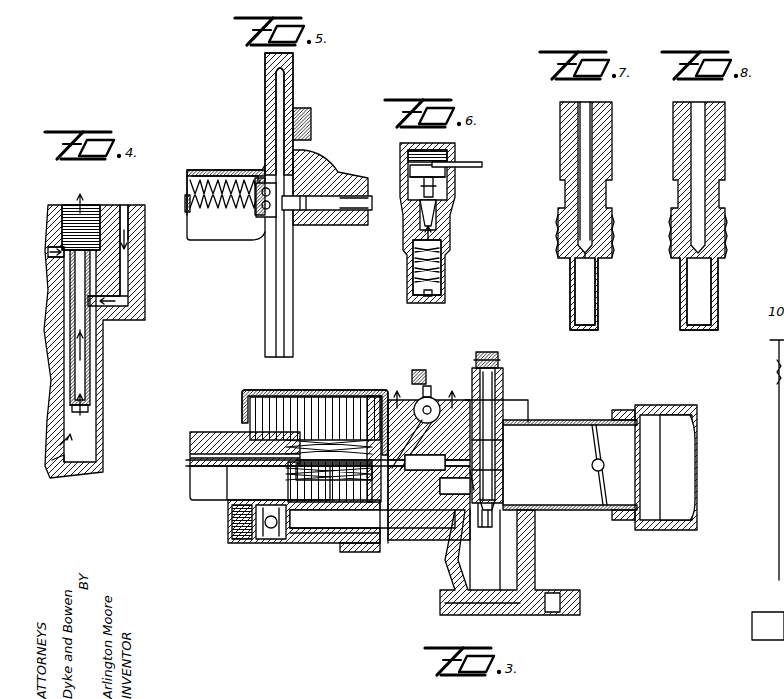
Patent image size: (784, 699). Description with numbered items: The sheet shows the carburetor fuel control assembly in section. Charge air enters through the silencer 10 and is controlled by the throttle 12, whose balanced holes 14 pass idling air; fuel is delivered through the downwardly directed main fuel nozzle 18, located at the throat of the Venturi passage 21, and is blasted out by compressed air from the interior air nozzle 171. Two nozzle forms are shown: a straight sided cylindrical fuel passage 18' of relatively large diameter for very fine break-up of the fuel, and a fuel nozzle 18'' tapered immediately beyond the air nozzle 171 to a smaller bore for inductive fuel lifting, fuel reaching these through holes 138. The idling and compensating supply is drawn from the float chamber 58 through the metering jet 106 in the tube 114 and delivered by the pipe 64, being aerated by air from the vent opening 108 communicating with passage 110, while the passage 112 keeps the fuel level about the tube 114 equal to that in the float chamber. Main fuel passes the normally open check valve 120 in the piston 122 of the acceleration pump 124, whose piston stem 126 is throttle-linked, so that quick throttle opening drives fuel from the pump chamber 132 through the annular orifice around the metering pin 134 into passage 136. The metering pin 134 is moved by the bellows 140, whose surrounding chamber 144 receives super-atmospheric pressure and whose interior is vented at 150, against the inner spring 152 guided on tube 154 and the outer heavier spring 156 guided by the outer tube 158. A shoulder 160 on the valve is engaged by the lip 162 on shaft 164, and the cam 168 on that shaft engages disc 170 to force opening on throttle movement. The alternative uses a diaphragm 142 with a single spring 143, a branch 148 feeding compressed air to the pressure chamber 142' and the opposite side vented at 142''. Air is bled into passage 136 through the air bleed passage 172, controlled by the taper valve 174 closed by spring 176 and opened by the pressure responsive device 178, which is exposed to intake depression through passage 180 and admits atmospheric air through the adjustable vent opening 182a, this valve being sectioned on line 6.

In FIG. 3, the silencer 10 is at (690, 479).
In FIG. 3, the throttle 12 is at (604, 468).
In FIG. 3, the balanced holes 14 is at (598, 440).
In FIG. 3, the main fuel nozzle 18 is at (490, 527).
In FIG. 8, the straight sided cylindrical fuel passage 18' is at (716, 294).
In FIG. 7, the fuel nozzle 18'' is at (600, 294).
In FIG. 3, the Venturi passage 21 is at (538, 530).
In FIG. 4, the float chamber 58 is at (56, 478).
In FIG. 4, the pipe 64 is at (92, 210).
In FIG. 4, the metering jet 106 is at (92, 407).
In FIG. 4, the air vent opening 108 is at (128, 210).
In FIG. 4, the passage 110 is at (128, 277).
In FIG. 4, the passage 112 is at (52, 252).
In FIG. 4, the tube 114 is at (90, 345).
In FIG. 3, the check valve 120 is at (276, 540).
In FIG. 3, the piston 122 is at (242, 540).
In FIG. 3, the acceleration pump 124 is at (320, 540).
In FIG. 3, the piston stem 126 is at (372, 552).
In FIG. 3, the pump chamber 132 is at (345, 528).
In FIG. 3, the metering pin 134 is at (456, 487).
In FIG. 3, the passage 136 is at (502, 470).
In FIG. 7, the holes 138 is at (610, 196).
In FIG. 8, the holes 138 is at (723, 196).
In FIG. 3, the bellows 140 is at (372, 395).
In FIG. 5, the diaphragm 142 is at (296, 205).
In FIG. 5, the pressure chamber 142' is at (305, 205).
In FIG. 5, the atmospheric vent 142'' is at (184, 176).
In FIG. 5, the spring 143 is at (230, 172).
In FIG. 3, the chamber 144 is at (278, 392).
In FIG. 5, the branch 148 is at (312, 124).
In FIG. 3, the atmospheric vent 150 is at (188, 462).
In FIG. 3, the inner spring 152 is at (296, 470).
In FIG. 3, the tube 154 is at (296, 462).
In FIG. 3, the outer spring 156 is at (310, 438).
In FIG. 3, the outer tube 158 is at (305, 486).
In FIG. 3, the shoulder 160 is at (425, 462).
In FIG. 3, the lip 162 is at (390, 400).
In FIG. 3, the shaft 164 is at (427, 390).
In FIG. 5, the cam 168 is at (302, 172).
In FIG. 3, the cam 168 is at (398, 528).
In FIG. 5, the disc 170 is at (300, 222).
In FIG. 3, the disc 170 is at (385, 510).
In FIG. 7, the air nozzle 171 is at (590, 227).
In FIG. 3, the air nozzle 171 is at (495, 487).
In FIG. 6, the air bleed passage 172 is at (436, 190).
In FIG. 3, the air bleed passage 172 is at (503, 440).
In FIG. 6, the taper valve 174 is at (438, 208).
In FIG. 6, the spring 176 is at (442, 264).
In FIG. 6, the pressure responsive device 178 is at (412, 176).
In FIG. 6, the passage 180 is at (466, 164).
In FIG. 3, the passage 180 is at (530, 420).
In FIG. 3, the atmospheric vent opening 182a is at (420, 385).
In FIG. 3, the section line 6— 6 is at (440, 400).